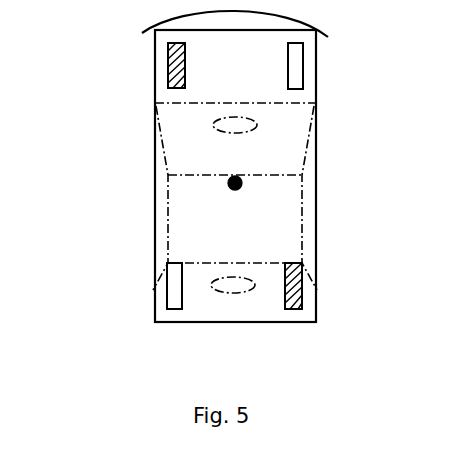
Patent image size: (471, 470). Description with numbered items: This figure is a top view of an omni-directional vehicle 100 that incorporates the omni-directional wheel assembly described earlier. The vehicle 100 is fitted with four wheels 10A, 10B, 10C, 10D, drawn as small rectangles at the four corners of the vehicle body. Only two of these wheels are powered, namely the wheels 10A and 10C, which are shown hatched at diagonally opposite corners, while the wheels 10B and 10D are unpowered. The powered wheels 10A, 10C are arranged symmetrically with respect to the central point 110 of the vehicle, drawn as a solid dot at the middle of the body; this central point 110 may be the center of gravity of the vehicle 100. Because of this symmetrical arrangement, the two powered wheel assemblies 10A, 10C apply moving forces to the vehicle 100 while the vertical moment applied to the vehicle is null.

The vehicle 100 is at (350, 180).
The wheel 10A is at (177, 73).
The wheel 10B is at (297, 70).
The wheel 10C is at (295, 292).
The wheel 10D is at (177, 288).
The central point 110 is at (235, 183).